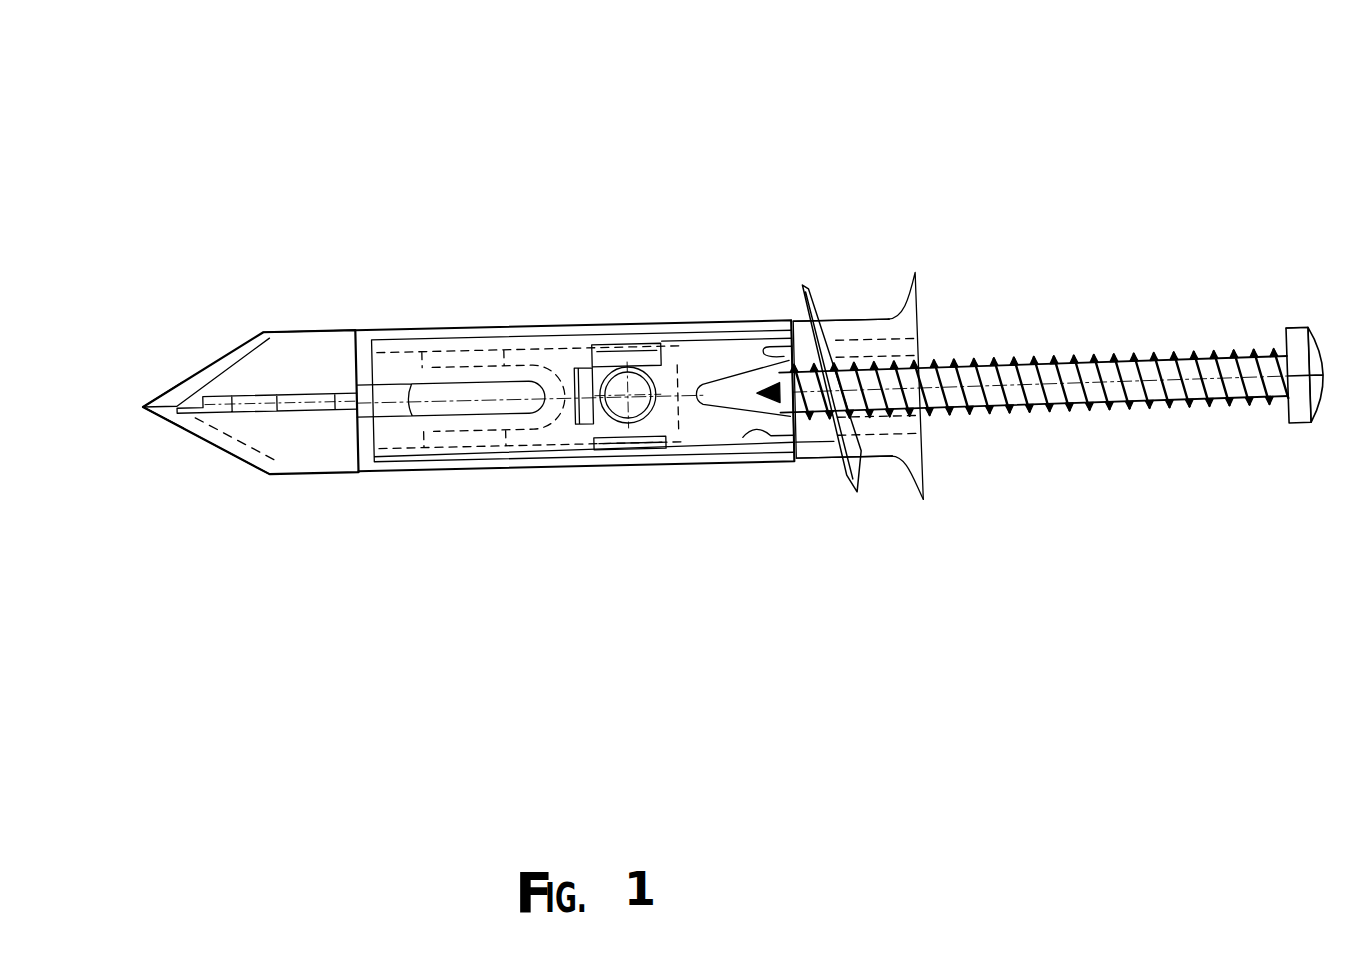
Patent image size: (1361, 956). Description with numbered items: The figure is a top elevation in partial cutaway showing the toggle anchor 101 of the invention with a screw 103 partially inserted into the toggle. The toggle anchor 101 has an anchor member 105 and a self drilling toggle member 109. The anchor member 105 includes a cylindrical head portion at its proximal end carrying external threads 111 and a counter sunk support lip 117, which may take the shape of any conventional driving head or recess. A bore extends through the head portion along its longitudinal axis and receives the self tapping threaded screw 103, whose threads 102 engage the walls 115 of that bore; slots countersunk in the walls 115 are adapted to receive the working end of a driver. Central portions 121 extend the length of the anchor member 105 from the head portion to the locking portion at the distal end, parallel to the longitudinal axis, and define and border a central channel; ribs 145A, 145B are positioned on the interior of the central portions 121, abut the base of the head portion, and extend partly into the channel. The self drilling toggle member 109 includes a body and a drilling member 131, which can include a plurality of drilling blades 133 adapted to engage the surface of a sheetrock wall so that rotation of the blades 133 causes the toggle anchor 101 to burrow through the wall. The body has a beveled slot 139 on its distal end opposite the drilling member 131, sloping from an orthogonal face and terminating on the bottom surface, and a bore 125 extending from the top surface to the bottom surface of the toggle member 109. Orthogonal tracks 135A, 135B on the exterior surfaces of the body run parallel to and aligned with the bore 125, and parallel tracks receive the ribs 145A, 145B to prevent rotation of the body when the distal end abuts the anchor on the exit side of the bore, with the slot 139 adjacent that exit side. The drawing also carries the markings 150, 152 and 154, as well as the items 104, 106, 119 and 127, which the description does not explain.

The toggle anchor 101 is at (657, 198).
The threads 102 is at (1183, 405).
The screw 103 is at (1209, 323).
The screw head 104 is at (1312, 316).
The anchor member 105 is at (861, 285).
The housing end wall 106 is at (757, 348).
The self drilling toggle member 109 is at (225, 313).
The external threads 111 is at (857, 494).
The walls 115 is at (927, 422).
The counter sunk support lip 117 is at (918, 272).
The anchor base 119 is at (820, 462).
The central portions 121 is at (462, 335).
The bore 125 is at (620, 405).
The slot 127 is at (390, 410).
The drilling member 131 is at (200, 445).
The drilling blades 133 is at (279, 416).
The orthogonal track 135A is at (616, 358).
The orthogonal track 135B is at (653, 453).
The beveled slot 139 is at (728, 390).
The rib 145A is at (783, 347).
The rib 145B is at (750, 432).
The tip marking 150 is at (309, 347).
The anchor plate 152 is at (841, 329).
The head marking 154 is at (1310, 327).